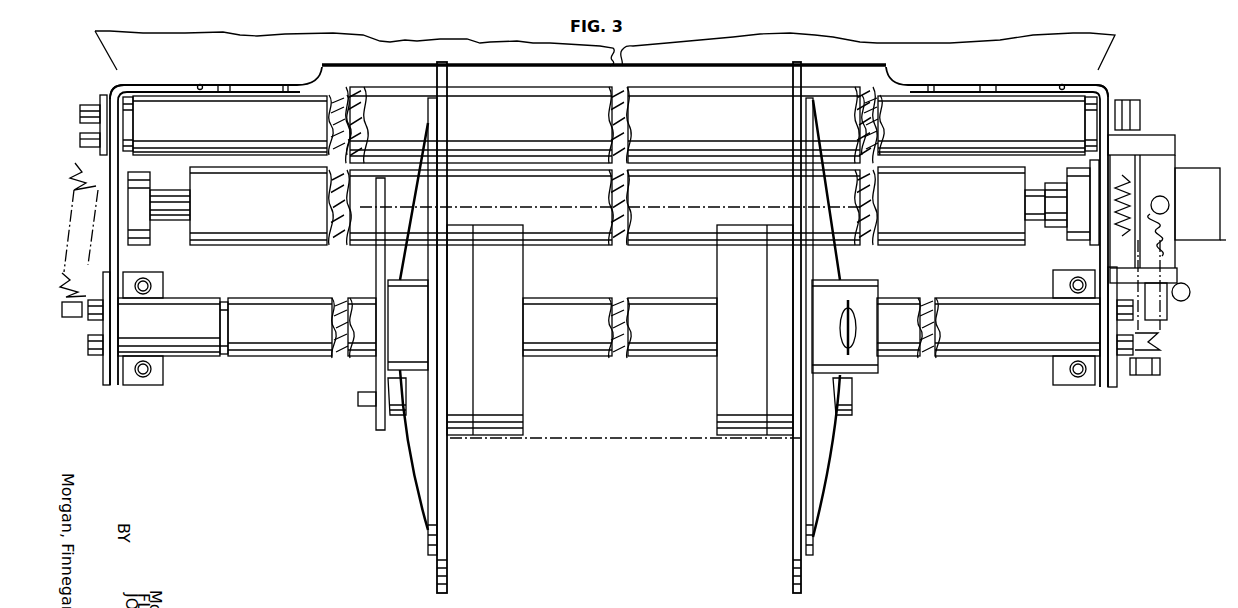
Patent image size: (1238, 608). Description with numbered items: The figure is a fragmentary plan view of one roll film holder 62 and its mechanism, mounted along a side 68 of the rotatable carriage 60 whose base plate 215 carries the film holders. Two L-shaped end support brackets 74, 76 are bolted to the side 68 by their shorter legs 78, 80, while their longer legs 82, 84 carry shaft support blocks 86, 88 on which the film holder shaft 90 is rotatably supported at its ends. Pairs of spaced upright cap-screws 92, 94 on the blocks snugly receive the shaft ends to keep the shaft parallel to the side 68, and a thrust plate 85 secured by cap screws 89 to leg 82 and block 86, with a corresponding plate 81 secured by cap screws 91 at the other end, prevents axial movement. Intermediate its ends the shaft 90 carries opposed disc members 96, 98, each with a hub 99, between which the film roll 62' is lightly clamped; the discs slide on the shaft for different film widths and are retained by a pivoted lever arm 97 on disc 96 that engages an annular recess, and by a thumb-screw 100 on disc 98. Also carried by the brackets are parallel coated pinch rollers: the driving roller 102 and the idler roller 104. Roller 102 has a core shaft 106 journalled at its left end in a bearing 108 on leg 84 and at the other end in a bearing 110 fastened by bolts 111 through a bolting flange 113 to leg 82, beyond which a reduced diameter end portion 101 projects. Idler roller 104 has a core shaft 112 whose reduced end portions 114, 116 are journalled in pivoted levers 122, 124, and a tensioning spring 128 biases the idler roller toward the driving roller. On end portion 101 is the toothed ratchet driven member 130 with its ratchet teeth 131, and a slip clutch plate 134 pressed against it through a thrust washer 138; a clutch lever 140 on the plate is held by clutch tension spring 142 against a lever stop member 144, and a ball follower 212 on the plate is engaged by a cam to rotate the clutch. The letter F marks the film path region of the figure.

The base plate 215 is at (963, 30).
The shorter leg 80 is at (172, 88).
The shorter leg 78 is at (1022, 88).
The carriage 60 is at (513, 53).
The end support bracket 76 is at (112, 83).
The end support bracket 74 is at (1112, 84).
The side of carriage 68 is at (202, 86).
The core shaft 112 is at (268, 125).
The reduced diameter end portion 116 is at (80, 112).
The idler roller 104 is at (546, 135).
The reduced diameter end portion 114 is at (1085, 130).
The driving roller 102 is at (280, 201).
The core shaft 106 is at (192, 210).
The bearing 108 is at (143, 178).
The bolts 111 is at (1058, 205).
The bearing 110 is at (1076, 178).
The bolting flange 113 is at (1088, 240).
The centerline F is at (695, 210).
The film holder shaft 90 is at (293, 310).
The shaft support block 88 is at (160, 372).
The reduced diameter end portion 101 is at (226, 302).
The longer leg 84 is at (125, 265).
The cap-screws 92 is at (150, 289).
The cap-screws 94 is at (146, 374).
The left mounting plate 81 is at (104, 377).
The cap screws 91 is at (88, 322).
The shaft support block 86 is at (1060, 378).
The thrust plate 85 is at (1117, 383).
The longer leg 82 is at (1104, 382).
The cap screws 89 is at (1122, 342).
The disc member 96 is at (437, 572).
The roll film holder 62 is at (396, 326).
The lever arm 97 is at (380, 280).
The hub 99 is at (505, 436).
The film roll 62' is at (625, 455).
The disc member 98 is at (806, 578).
The thumb-screw 100 is at (878, 374).
The lever 124 is at (104, 96).
The tensioning spring 128 is at (78, 178).
The lever 122 is at (1120, 104).
The thrust washer 138 is at (1130, 232).
The clutch lever 140 is at (1162, 205).
The clutch tension spring 142 is at (1165, 228).
The ratchet driven member 130 is at (1185, 170).
The ratchet teeth 131 is at (1226, 242).
The lever stop member 144 is at (1177, 279).
The ball follower 212 is at (1190, 295).
The slip clutch plate 134 is at (1168, 318).